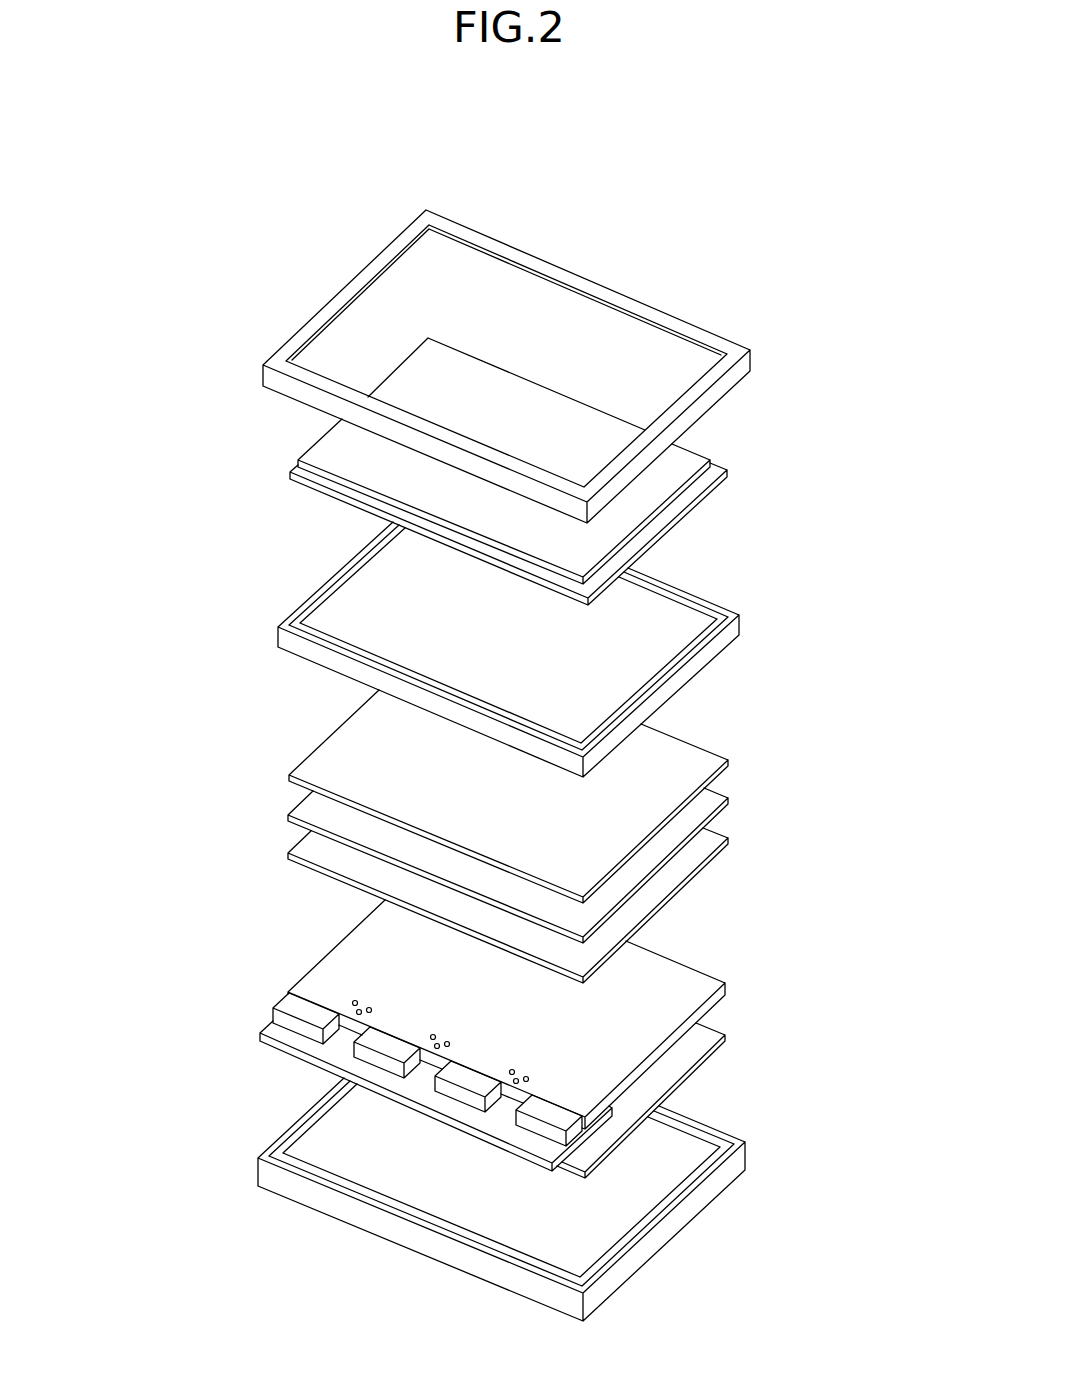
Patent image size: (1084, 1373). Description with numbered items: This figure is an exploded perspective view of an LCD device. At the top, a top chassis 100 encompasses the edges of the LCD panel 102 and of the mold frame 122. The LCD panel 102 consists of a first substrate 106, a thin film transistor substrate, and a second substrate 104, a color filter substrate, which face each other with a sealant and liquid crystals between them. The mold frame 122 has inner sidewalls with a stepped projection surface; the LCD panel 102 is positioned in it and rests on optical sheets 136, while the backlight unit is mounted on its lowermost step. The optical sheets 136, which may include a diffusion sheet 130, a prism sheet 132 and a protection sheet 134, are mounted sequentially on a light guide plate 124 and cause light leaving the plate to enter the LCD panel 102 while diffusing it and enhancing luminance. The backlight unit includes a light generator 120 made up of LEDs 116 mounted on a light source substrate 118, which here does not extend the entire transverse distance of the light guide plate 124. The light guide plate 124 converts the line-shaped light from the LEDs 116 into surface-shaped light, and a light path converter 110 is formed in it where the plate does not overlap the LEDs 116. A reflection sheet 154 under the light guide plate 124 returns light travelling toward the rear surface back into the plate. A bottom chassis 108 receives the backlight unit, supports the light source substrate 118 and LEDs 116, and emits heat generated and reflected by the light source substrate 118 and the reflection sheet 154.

The top chassis 100 is at (750, 362).
The LCD panel 102 is at (611, 484).
The second substrate 104 is at (692, 457).
The first substrate 106 is at (713, 477).
The bottom chassis 108 is at (723, 1175).
The light path converter 110 is at (517, 1060).
The LEDs 116 is at (283, 1004).
The light source substrate 118 is at (260, 1038).
The light generator 120 is at (347, 1072).
The mold frame 122 is at (728, 640).
The light guide plate 124 is at (711, 1000).
The diffusion sheet 130 is at (578, 892).
The prism sheet 132 is at (710, 803).
The protection sheet 134 is at (703, 767).
The optical sheets 136 is at (609, 834).
The reflection sheet 154 is at (702, 1057).